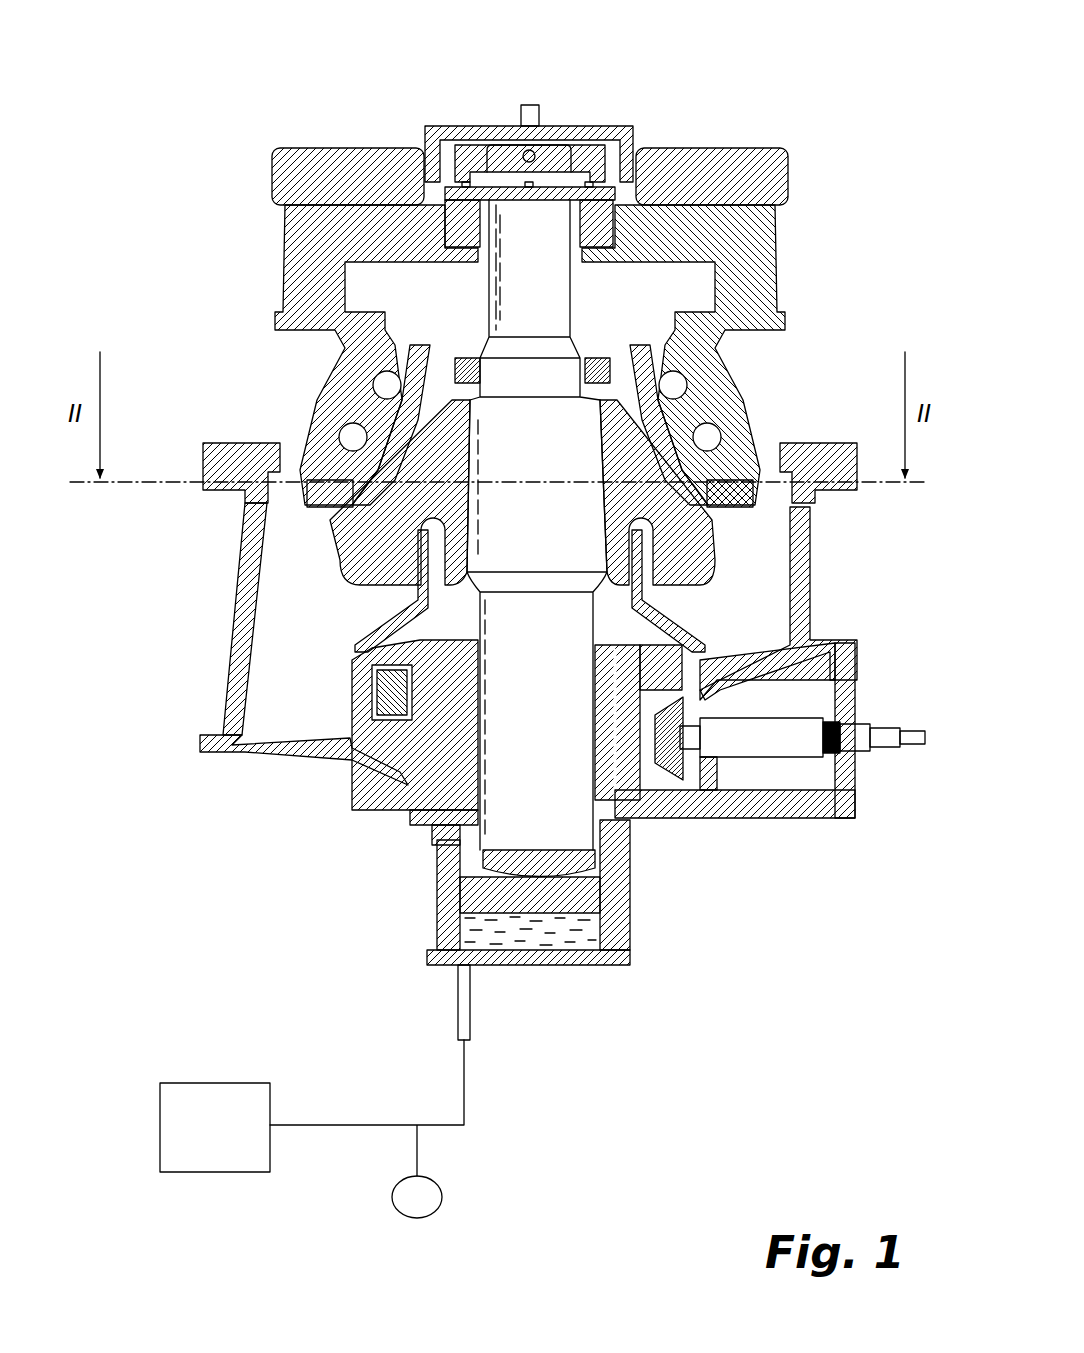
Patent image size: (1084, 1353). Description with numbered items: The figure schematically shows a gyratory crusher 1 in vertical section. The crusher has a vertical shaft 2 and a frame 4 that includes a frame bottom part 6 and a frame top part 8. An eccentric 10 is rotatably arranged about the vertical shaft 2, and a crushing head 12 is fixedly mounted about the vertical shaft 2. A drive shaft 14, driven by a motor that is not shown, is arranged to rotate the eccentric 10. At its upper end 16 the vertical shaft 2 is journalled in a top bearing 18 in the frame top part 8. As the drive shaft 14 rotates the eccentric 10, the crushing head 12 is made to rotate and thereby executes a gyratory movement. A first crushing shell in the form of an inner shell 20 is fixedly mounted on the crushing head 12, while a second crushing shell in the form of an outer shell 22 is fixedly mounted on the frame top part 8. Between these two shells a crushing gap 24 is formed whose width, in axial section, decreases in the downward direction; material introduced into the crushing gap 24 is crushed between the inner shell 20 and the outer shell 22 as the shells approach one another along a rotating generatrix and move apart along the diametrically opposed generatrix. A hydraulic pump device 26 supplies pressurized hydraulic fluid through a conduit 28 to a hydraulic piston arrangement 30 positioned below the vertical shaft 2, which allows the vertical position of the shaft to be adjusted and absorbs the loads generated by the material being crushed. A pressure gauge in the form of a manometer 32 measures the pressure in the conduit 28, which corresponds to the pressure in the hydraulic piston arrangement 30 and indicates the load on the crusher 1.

The gyratory crusher 1 is at (215, 130).
The vertical shaft 2 is at (558, 530).
The frame 4 is at (245, 525).
The frame bottom part 6 is at (240, 677).
The frame top part 8 is at (235, 447).
The eccentric 10 is at (400, 775).
The crushing head 12 is at (355, 598).
The drive shaft 14 is at (768, 735).
The upper end 16 is at (553, 293).
The top bearing 18 is at (607, 207).
The inner shell 20 is at (325, 468).
The outer shell 22 is at (365, 445).
The crushing gap 24 is at (400, 423).
The hydraulic pump device 26 is at (214, 1083).
The conduit 28 is at (465, 1097).
The hydraulic piston arrangement 30 is at (625, 917).
The manometer 32 is at (440, 1205).